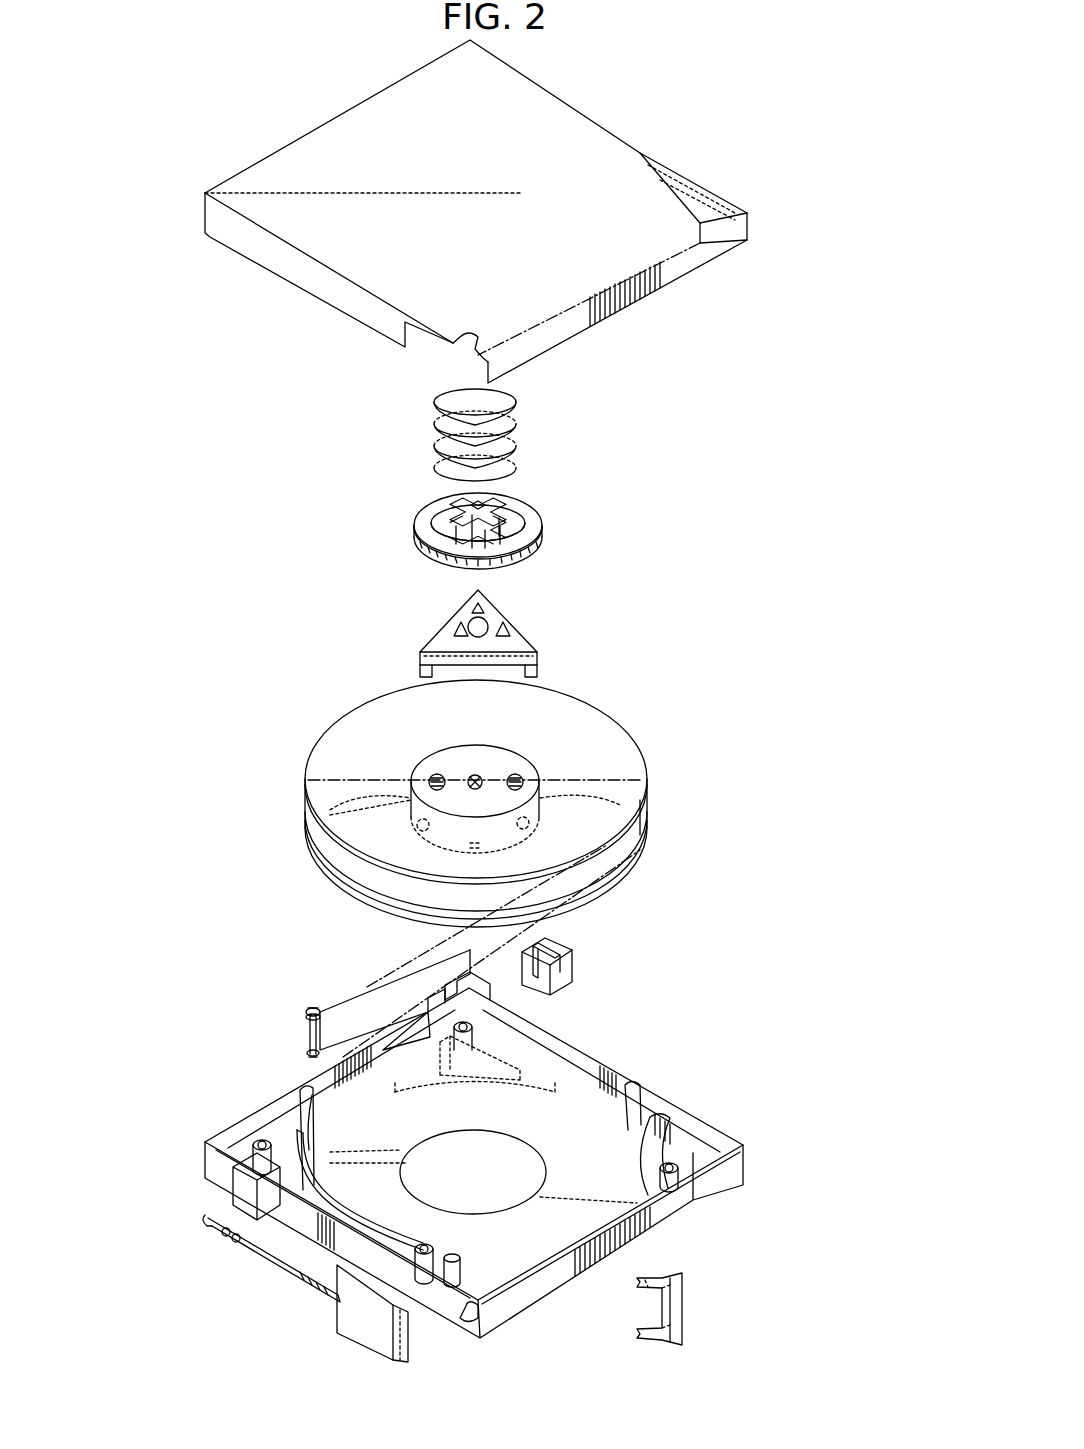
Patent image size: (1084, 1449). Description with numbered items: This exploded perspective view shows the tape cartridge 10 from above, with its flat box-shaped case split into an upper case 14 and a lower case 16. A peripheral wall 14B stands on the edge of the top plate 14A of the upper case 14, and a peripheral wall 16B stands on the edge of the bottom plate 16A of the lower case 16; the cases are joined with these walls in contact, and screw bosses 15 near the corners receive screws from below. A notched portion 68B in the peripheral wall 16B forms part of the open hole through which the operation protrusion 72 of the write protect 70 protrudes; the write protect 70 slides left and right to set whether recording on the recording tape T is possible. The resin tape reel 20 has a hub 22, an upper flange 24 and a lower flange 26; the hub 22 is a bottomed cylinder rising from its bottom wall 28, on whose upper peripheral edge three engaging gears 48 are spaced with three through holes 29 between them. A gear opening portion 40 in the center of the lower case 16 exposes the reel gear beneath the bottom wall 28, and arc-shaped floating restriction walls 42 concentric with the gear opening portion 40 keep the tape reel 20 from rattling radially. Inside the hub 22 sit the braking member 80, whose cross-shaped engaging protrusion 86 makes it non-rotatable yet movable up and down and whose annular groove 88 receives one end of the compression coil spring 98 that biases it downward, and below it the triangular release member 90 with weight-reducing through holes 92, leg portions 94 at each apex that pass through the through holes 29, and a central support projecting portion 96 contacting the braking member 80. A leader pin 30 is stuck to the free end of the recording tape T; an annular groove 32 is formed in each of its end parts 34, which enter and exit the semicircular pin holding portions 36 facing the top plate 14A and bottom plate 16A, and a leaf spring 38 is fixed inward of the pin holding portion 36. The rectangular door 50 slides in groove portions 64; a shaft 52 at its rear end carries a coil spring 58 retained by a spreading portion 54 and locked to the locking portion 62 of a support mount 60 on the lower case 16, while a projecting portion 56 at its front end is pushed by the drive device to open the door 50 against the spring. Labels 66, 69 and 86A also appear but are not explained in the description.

The tape cartridge 10 is at (727, 113).
The upper case 14 is at (514, 705).
The top plate 14A is at (582, 135).
The peripheral wall 14B is at (680, 263).
The screw boss 15 is at (183, 1120).
The lower case 16 is at (507, 1155).
The bottom plate 16A is at (577, 1112).
The peripheral wall 16B is at (667, 1213).
The tape reel 20 is at (486, 783).
The hub 22 is at (467, 746).
The upper flange 24 is at (600, 740).
The lower flange 26 is at (648, 840).
The bottom wall 28 is at (288, 825).
The through hole 29 is at (473, 775).
The leader pin 30 is at (277, 1020).
The annular groove 32 is at (272, 992).
The end part 34 is at (290, 973).
The pin holding portion 36 is at (500, 1353).
The leaf spring 38 is at (675, 1308).
The gear opening portion 40 is at (522, 1141).
The floating restriction wall 42 is at (230, 1103).
The engaging gear 48 is at (565, 729).
The door 50 is at (395, 1318).
The shaft 52 is at (245, 1262).
The spreading portion 54 is at (203, 1228).
The projecting portion 56 is at (362, 1317).
The coil spring 58 is at (207, 1260).
The support mount 60 is at (307, 1185).
The locking portion 62 is at (303, 1145).
The groove portion 64 is at (455, 1285).
The support block 66 is at (210, 1202).
The notched portion 68B is at (437, 1000).
The guide wall 69 is at (420, 1063).
The write protect 70 is at (579, 955).
The operation protrusion 72 is at (553, 947).
The braking member 80 is at (486, 500).
The engaging protrusion 86 is at (507, 507).
The engagement boss top 86A is at (420, 467).
The annular groove 88 is at (440, 513).
The release member 90 is at (499, 627).
The through hole 92 is at (492, 608).
The leg portion 94 is at (590, 665).
The support projecting portion 96 is at (457, 617).
The compression coil spring 98 is at (514, 407).
The recording tape T is at (338, 1020).